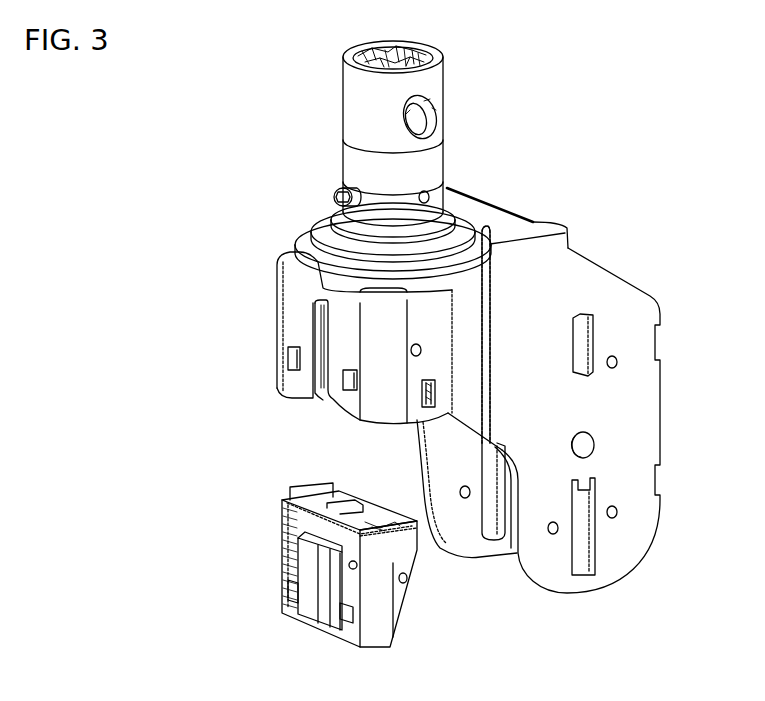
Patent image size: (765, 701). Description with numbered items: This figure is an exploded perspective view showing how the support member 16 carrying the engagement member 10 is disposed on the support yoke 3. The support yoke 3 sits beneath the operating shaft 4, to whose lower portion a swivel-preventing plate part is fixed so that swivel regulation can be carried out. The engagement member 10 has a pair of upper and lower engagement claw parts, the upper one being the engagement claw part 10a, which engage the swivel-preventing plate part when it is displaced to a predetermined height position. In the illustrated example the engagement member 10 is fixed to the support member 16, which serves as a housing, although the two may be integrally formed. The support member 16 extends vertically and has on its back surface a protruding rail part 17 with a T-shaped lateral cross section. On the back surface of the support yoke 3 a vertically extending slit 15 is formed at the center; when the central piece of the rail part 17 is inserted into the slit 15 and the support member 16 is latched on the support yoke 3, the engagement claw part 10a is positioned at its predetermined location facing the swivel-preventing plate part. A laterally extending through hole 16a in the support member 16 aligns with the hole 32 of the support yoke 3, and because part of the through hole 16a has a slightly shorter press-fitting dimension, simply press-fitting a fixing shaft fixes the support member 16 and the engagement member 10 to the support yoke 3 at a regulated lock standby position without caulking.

The support yoke 3 is at (602, 249).
The operating shaft 4 is at (323, 128).
The engagement member 10 is at (370, 575).
The engagement claw part 10a is at (362, 484).
The slit 15 is at (320, 333).
The support member 16 is at (437, 586).
The through hole 16a is at (410, 579).
The rail part 17 is at (307, 604).
The hole 32 is at (419, 345).